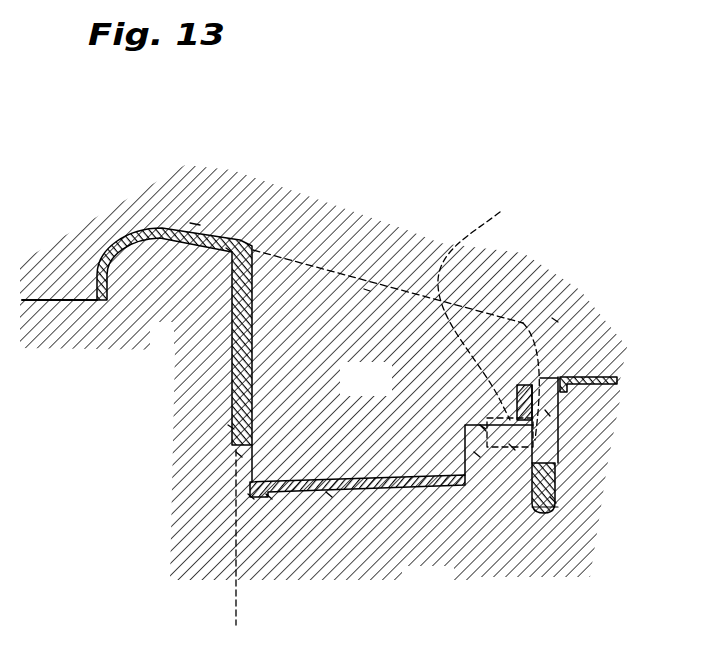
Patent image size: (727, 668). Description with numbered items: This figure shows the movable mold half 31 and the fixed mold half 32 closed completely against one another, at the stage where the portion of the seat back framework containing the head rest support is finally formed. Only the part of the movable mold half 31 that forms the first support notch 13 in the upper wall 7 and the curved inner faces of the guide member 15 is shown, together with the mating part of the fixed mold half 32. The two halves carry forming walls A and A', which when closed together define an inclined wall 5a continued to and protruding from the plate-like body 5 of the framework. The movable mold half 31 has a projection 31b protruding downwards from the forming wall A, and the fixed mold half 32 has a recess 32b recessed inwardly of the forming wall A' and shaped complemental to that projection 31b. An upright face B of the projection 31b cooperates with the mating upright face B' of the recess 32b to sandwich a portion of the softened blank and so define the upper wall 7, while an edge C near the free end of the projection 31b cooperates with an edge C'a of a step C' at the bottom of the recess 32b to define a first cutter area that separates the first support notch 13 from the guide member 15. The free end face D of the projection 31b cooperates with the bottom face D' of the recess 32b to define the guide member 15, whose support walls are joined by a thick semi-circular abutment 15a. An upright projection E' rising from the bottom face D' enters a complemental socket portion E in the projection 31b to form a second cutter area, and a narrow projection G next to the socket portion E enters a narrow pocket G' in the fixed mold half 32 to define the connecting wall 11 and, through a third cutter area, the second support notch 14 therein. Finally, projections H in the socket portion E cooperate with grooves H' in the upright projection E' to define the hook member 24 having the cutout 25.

The movable mold half 31 is at (157, 203).
The projection 31b is at (388, 393).
The fixed mold half 32 is at (117, 320).
The recess 32b is at (398, 477).
The upper wall 7 is at (232, 313).
The guide member 15 is at (370, 495).
The semi-circular abutment 15a is at (300, 495).
The first support notch 13 is at (237, 554).
The plate-like body 5 is at (575, 386).
The inclined wall 5a is at (488, 316).
The hook member 24 is at (550, 413).
The second support notch 14 is at (553, 450).
The connecting wall 11 is at (533, 509).
The cutout 25 is at (540, 378).
The forming wall A is at (258, 184).
The upright face B is at (388, 235).
The edge C is at (278, 575).
The free end face D is at (356, 574).
The socket portion E is at (524, 318).
The narrow projection G is at (613, 390).
The projections H is at (583, 279).
The forming wall A' is at (177, 350).
The mating upright face B' is at (177, 473).
The step C' is at (180, 517).
The edge C'a is at (207, 563).
The bottom face D' is at (476, 554).
The upright projection E' is at (503, 541).
The narrow pocket G' is at (614, 514).
The grooves H' is at (538, 550).